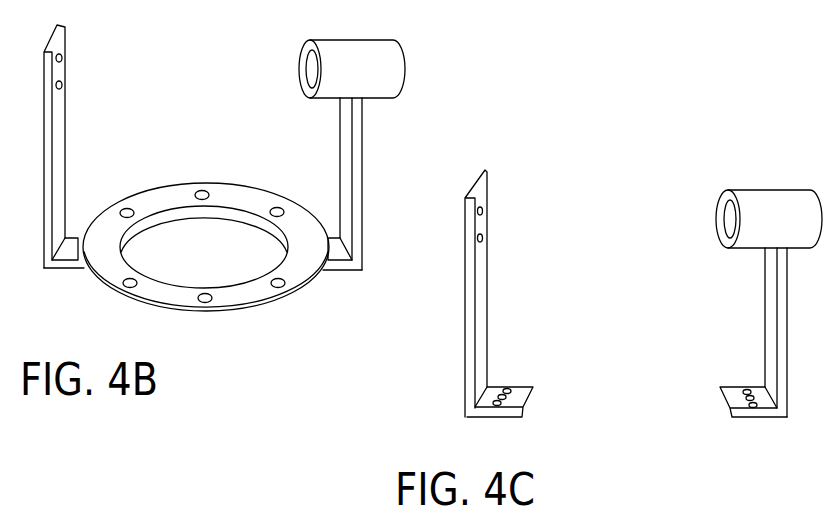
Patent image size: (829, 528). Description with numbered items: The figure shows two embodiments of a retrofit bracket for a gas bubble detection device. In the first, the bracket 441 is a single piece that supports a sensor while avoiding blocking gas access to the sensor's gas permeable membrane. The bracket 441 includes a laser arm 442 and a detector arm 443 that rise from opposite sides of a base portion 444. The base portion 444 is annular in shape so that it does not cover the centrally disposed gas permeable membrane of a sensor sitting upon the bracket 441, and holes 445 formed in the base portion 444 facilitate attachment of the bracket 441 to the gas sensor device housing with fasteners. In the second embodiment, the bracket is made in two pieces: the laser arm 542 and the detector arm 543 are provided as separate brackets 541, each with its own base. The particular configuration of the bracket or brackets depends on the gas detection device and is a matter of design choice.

In FIG. 4B, the bracket 441 is at (335, 258).
In FIG. 4B, the laser arm 442 is at (358, 124).
In FIG. 4B, the detector arm 443 is at (62, 103).
In FIG. 4B, the base portion 444 is at (212, 318).
In FIG. 4B, the holes 445 is at (127, 207).
In FIG. 4C, the separate brackets 541 is at (518, 420).
In FIG. 4C, the laser arm 542 is at (765, 326).
In FIG. 4C, the detector arm 543 is at (481, 304).